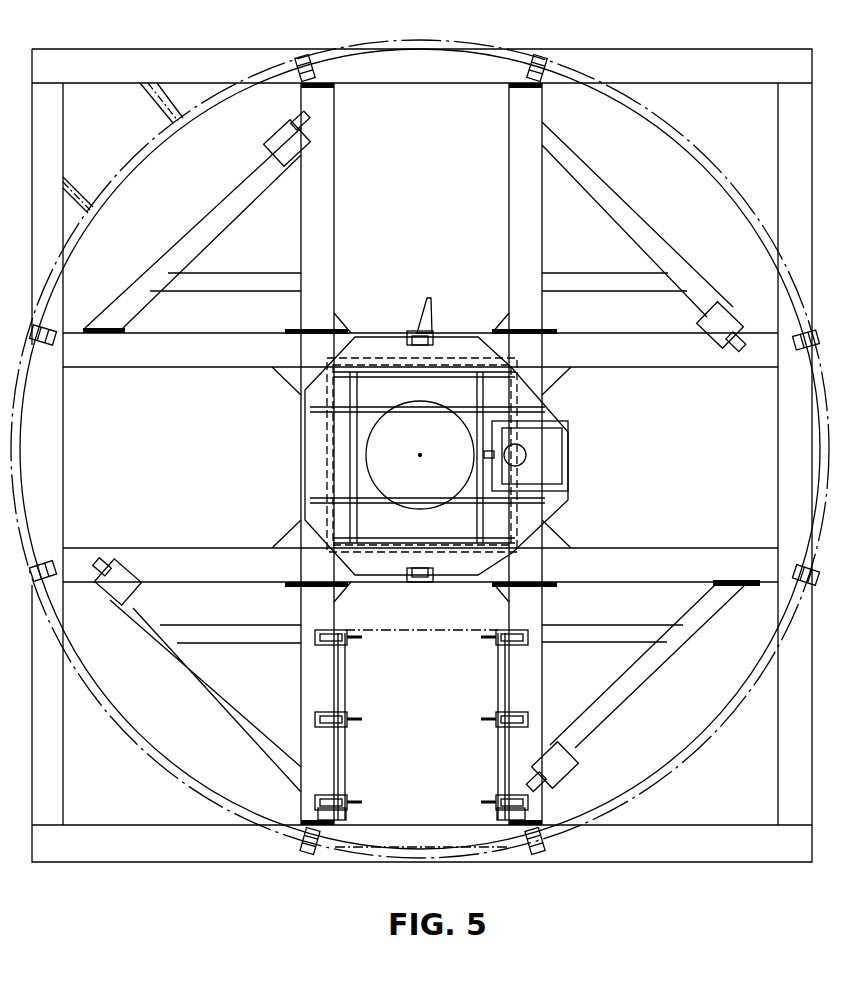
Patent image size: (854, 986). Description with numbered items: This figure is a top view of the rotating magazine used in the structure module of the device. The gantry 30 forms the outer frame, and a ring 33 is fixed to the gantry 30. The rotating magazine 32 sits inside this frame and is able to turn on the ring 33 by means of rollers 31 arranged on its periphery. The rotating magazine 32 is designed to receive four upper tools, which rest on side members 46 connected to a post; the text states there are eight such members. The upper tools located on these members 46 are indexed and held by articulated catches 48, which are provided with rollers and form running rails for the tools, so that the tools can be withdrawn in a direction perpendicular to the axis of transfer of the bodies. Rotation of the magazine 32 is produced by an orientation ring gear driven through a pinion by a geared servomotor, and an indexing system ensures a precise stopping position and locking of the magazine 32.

The gantry 30 is at (603, 62).
The rollers 31 is at (306, 58).
The rotating magazine 32 is at (401, 204).
The ring 33 is at (128, 167).
The side members 46 is at (530, 737).
The articulated catches 48 is at (345, 677).